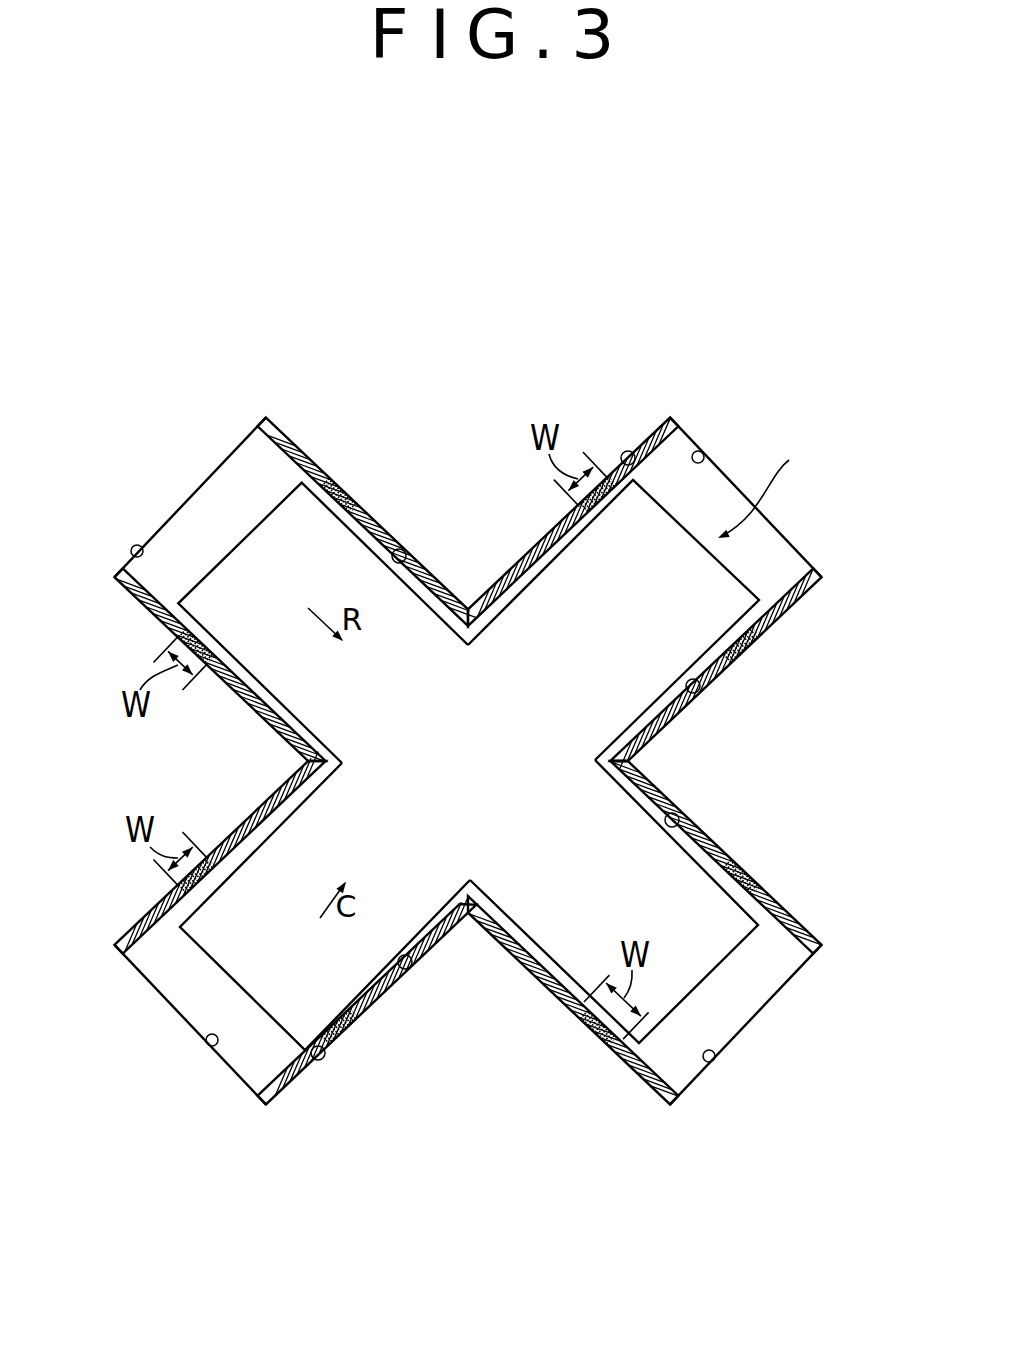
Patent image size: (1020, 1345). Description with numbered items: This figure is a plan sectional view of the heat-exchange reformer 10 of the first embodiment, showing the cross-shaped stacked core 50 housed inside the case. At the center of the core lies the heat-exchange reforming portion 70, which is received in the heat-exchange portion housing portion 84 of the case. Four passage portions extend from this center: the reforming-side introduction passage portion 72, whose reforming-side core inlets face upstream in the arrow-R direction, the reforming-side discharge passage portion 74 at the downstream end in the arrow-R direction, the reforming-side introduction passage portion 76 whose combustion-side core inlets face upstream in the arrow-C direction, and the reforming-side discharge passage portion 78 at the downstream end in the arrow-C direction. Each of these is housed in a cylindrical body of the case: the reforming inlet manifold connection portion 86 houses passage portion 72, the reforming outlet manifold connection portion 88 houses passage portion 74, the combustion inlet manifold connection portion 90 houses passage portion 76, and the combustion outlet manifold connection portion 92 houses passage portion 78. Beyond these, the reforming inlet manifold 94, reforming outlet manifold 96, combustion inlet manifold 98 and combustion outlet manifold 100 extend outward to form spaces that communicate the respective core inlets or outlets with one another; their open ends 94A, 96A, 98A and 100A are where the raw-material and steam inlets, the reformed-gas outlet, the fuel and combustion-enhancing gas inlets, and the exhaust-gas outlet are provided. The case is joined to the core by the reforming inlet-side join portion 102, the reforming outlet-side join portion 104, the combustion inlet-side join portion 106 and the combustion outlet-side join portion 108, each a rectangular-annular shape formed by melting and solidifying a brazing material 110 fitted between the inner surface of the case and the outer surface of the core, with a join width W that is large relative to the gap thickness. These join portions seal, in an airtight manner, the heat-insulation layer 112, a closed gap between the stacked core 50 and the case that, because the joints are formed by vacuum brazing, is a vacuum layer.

The joined structure 10 is at (516, 352).
The stacked core 50 is at (769, 490).
The heat-exchange reforming portion 70 is at (496, 757).
The reforming-side introduction passage portion 72 is at (240, 582).
The reforming-side discharge passage portion 74 is at (680, 876).
The reforming-side introduction passage portion 76 is at (260, 876).
The reforming-side discharge passage portion 78 is at (720, 610).
The heat-exchange portion housing portion 84 is at (638, 750).
The reforming inlet manifold connection portion 86 is at (406, 548).
The reforming outlet manifold connection portion 88 is at (677, 813).
The combustion inlet manifold connection portion 90 is at (411, 969).
The combustion outlet manifold connection portion 92 is at (700, 692).
The reforming inlet manifold 94 is at (267, 423).
The open end 94A is at (132, 548).
The reforming outlet manifold 96 is at (782, 993).
The open end 96A is at (715, 1062).
The combustion inlet manifold 98 is at (165, 990).
The open end 98A is at (210, 1047).
The combustion outlet manifold 100 is at (821, 563).
The open end 100A is at (700, 450).
The reforming inlet-side join portion 102 is at (392, 548).
The reforming outlet-side join portion 104 is at (788, 905).
The combustion inlet-side join portion 106 is at (318, 1061).
The combustion outlet-side join portion 108 is at (631, 451).
The brazing material 110 is at (350, 500).
The heat-insulation layer 112 is at (545, 982).